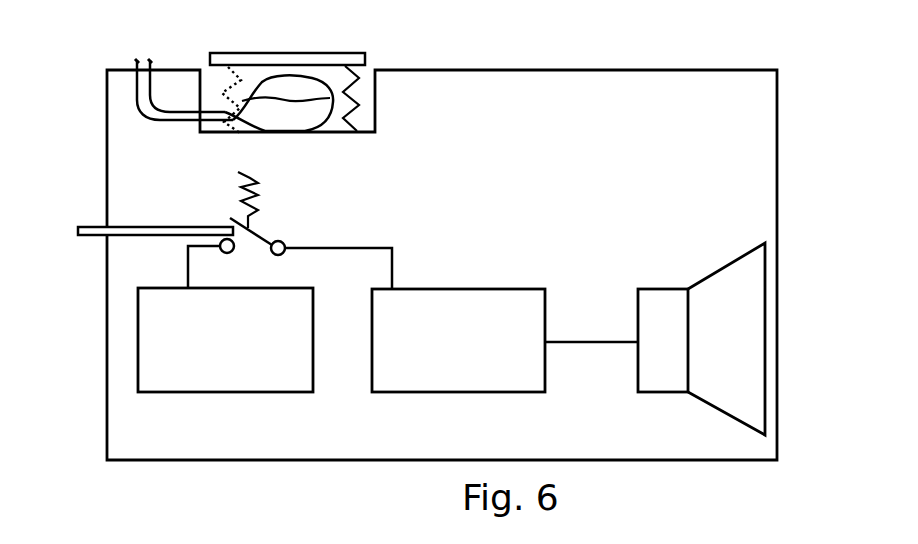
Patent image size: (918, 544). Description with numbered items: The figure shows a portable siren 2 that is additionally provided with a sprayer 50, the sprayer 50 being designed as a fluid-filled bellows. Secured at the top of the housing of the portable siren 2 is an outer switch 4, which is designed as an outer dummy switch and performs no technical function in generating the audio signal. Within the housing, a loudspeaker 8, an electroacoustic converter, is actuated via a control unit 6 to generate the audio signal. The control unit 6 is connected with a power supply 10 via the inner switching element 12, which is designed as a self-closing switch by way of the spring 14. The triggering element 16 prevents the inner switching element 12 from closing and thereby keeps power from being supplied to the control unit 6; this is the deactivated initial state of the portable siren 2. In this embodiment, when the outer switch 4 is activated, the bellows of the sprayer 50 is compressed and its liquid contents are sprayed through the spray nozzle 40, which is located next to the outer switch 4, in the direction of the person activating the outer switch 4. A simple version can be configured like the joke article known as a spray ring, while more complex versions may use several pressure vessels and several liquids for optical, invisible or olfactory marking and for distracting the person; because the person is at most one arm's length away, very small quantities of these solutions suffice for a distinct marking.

The portable siren 2 is at (495, 53).
The outer switch 4 is at (282, 52).
The control unit 6 is at (458, 340).
The loudspeaker 8 is at (701, 339).
The power supply 10 is at (225, 340).
The inner switching element 12 is at (233, 190).
The spring 14 is at (215, 210).
The triggering element 16 is at (95, 240).
The spray nozzle 40 is at (147, 56).
The sprayer 50 is at (292, 113).